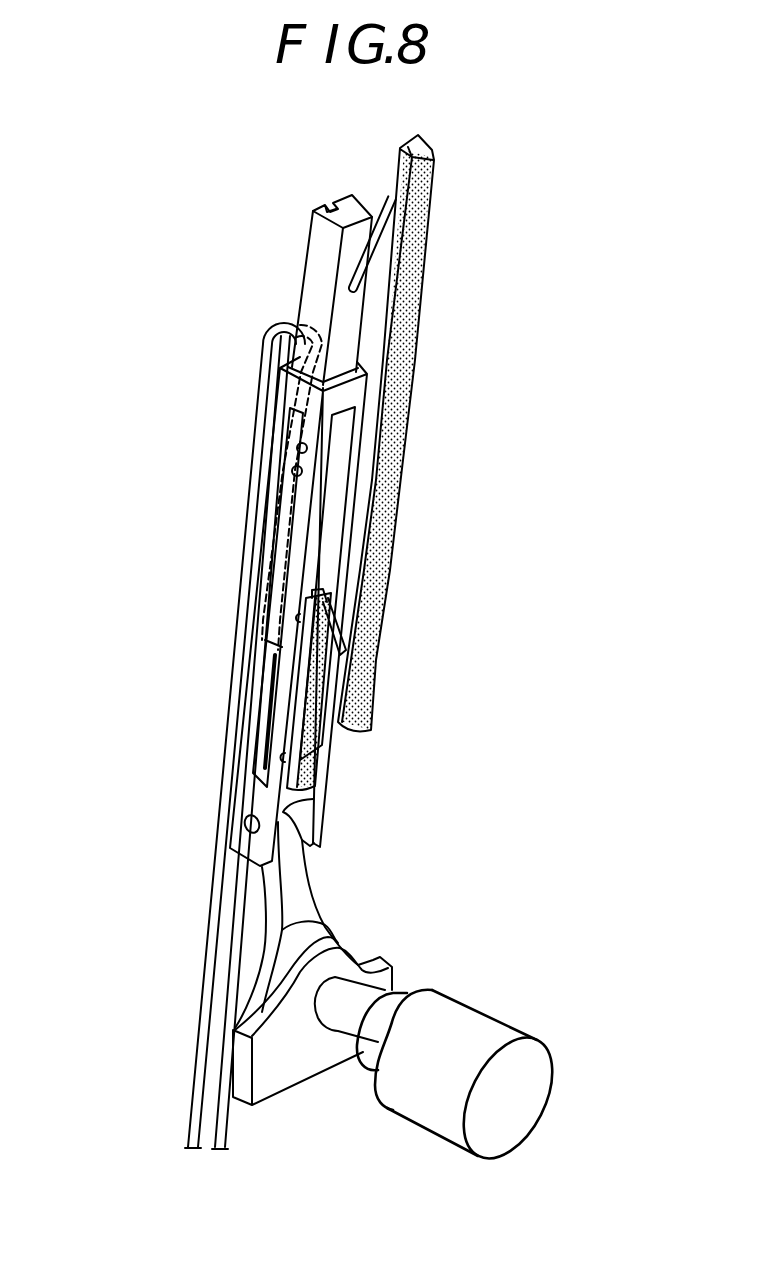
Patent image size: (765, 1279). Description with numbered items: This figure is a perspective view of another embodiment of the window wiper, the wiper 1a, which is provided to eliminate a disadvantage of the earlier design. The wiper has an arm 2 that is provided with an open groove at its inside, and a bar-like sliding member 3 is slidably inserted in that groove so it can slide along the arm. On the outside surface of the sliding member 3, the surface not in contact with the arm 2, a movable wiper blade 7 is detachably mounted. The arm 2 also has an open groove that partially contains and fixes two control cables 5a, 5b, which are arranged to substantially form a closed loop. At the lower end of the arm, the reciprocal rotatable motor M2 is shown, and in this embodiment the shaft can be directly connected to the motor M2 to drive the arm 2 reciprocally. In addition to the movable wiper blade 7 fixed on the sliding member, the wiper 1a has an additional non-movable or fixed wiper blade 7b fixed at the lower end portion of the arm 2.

The window wiper 1a is at (482, 782).
The arm 2 is at (243, 793).
The sliding member 3 is at (313, 277).
The control cable 5a is at (197, 1035).
The control cable 5b is at (223, 1122).
The wiper blade 7 is at (387, 587).
The fixed wiper blade 7b is at (315, 764).
The reciprocal rotatable motor M2 is at (407, 1103).